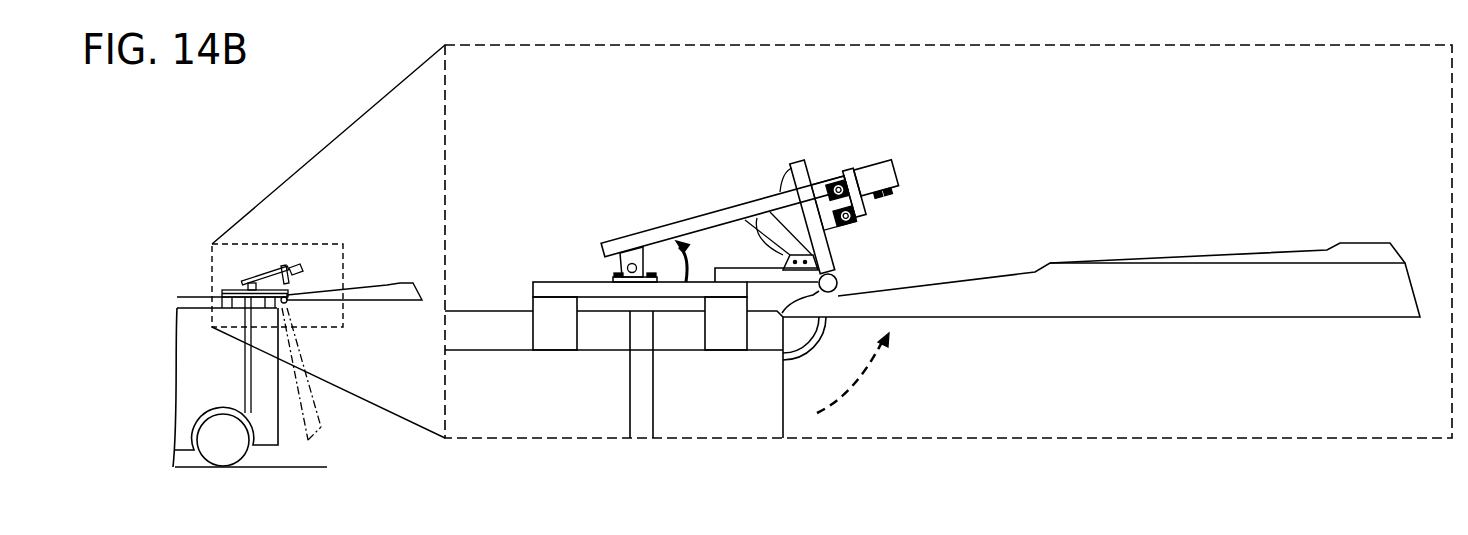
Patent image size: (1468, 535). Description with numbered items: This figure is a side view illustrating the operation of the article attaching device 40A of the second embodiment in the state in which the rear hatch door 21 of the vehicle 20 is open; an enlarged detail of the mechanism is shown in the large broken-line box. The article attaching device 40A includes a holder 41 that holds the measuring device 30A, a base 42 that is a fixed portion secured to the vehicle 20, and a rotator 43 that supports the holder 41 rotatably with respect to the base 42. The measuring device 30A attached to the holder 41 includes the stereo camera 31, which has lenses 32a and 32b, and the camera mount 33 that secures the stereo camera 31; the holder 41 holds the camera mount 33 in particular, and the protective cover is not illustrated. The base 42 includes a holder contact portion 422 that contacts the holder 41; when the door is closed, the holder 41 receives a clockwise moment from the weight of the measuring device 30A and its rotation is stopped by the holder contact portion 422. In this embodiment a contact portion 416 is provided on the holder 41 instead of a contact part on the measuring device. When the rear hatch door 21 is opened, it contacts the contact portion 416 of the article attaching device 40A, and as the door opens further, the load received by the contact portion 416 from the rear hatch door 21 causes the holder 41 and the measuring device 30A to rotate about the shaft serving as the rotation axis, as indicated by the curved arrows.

The vehicle 20 is at (192, 320).
The rear hatch door 21 is at (1300, 255).
The measuring device 30A is at (300, 273).
The stereo camera 31 is at (873, 180).
The lens 32a is at (887, 200).
The lens 32b is at (887, 192).
The camera mount 33 is at (822, 197).
The article attaching device 40A is at (245, 287).
The holder 41 is at (687, 217).
The base 42 is at (667, 278).
The rotator 43 is at (605, 268).
The contact portion 416 is at (840, 287).
The holder contact portion 422 is at (785, 256).